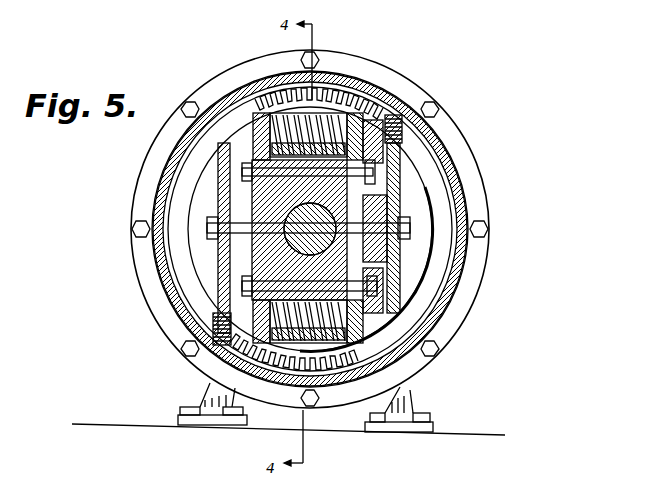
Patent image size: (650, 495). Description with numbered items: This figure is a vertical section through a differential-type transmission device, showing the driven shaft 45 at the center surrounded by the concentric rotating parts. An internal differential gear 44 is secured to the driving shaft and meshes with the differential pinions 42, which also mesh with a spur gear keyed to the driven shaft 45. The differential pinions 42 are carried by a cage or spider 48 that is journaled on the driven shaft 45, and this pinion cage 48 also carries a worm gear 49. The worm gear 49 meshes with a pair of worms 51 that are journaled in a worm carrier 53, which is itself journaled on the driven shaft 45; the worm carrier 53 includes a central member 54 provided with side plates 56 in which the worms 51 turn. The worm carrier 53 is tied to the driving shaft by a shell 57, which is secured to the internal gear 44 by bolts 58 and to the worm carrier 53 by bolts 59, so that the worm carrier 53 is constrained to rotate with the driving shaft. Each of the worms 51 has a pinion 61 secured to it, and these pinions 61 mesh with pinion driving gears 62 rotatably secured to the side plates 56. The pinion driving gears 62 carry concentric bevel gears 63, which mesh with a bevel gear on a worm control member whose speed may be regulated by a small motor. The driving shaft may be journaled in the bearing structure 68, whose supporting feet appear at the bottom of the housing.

The differential pinions 42 is at (325, 95).
The internal differential gear 44 is at (382, 90).
The driven shaft 45 is at (185, 291).
The cage or spider 48 is at (185, 237).
The worm gear 49 is at (218, 182).
The worms 51 is at (275, 85).
The worm carrier 53 is at (400, 182).
The central member 54 is at (400, 273).
The side plates 56 is at (253, 133).
The shell 57 is at (443, 145).
The bolts 58 is at (318, 52).
The bolts 59 is at (226, 95).
The pinions 61 is at (400, 110).
The pinion driving gears 62 is at (217, 267).
The bevel gears 63 is at (218, 205).
The bearing structure 68 is at (403, 393).